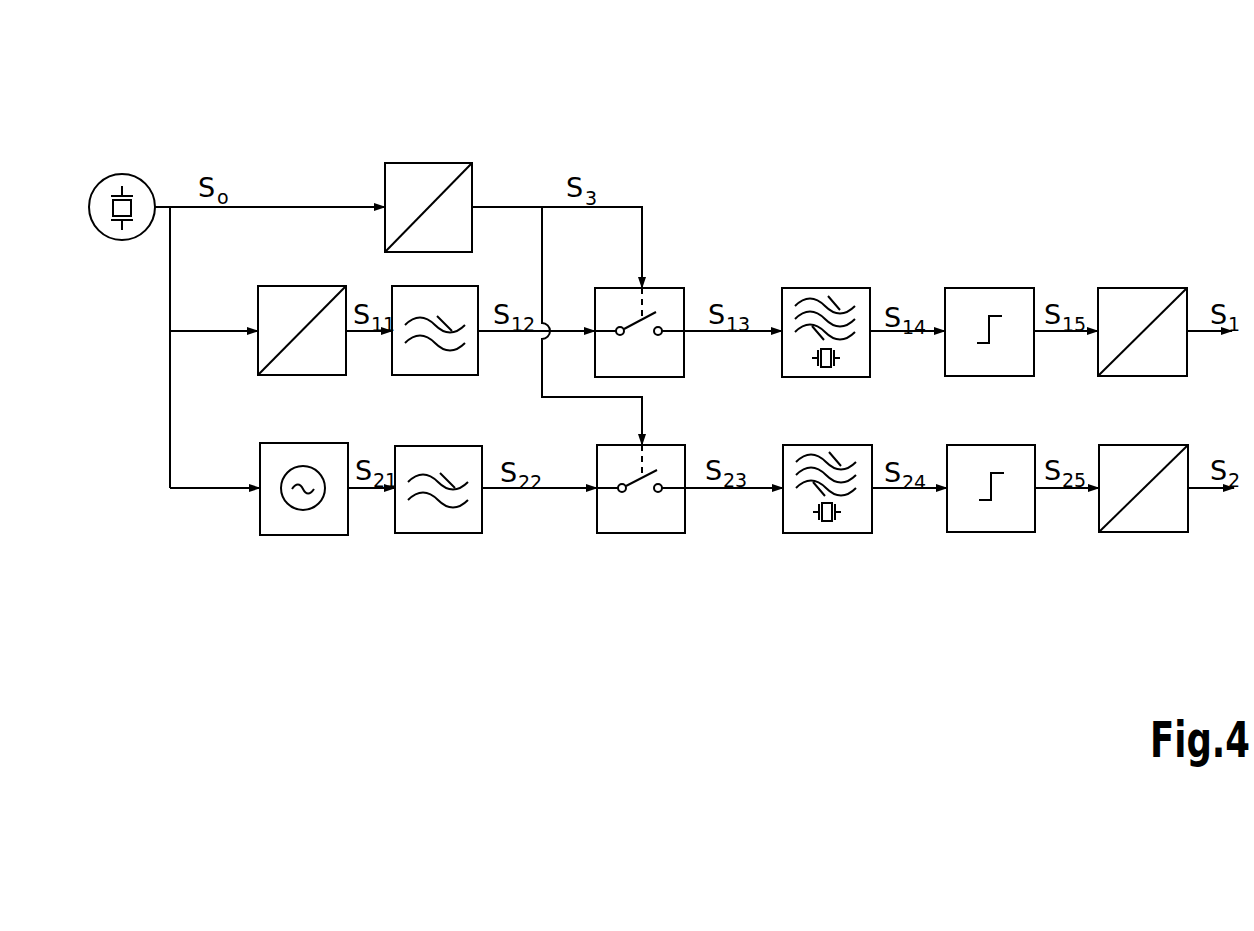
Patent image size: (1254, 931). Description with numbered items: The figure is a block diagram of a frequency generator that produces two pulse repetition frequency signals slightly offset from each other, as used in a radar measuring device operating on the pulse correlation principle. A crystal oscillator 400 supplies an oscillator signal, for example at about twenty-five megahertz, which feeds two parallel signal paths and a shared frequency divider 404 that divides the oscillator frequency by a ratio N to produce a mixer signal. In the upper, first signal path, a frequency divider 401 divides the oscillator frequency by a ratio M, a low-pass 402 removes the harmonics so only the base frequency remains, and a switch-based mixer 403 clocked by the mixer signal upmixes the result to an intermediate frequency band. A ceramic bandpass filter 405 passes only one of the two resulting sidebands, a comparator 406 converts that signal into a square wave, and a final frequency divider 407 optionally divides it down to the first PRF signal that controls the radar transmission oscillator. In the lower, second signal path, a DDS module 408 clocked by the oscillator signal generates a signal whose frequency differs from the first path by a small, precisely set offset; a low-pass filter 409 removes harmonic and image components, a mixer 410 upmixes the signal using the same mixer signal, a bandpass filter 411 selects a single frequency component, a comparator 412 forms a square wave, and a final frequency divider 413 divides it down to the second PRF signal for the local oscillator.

The crystal oscillator 400 is at (103, 235).
The frequency divider 401 is at (305, 310).
The low-pass 402 is at (438, 368).
The mixer 403 is at (673, 300).
The frequency divider 404 is at (432, 163).
The bandpass filter 405 is at (837, 300).
The comparator 406 is at (975, 298).
The final frequency divider 407 is at (1160, 297).
The DDS module 408 is at (283, 515).
The low-pass filter 409 is at (434, 520).
The mixer 410 is at (630, 515).
The bandpass filter 411 is at (852, 525).
The comparator 412 is at (973, 527).
The final frequency divider 413 is at (1135, 520).